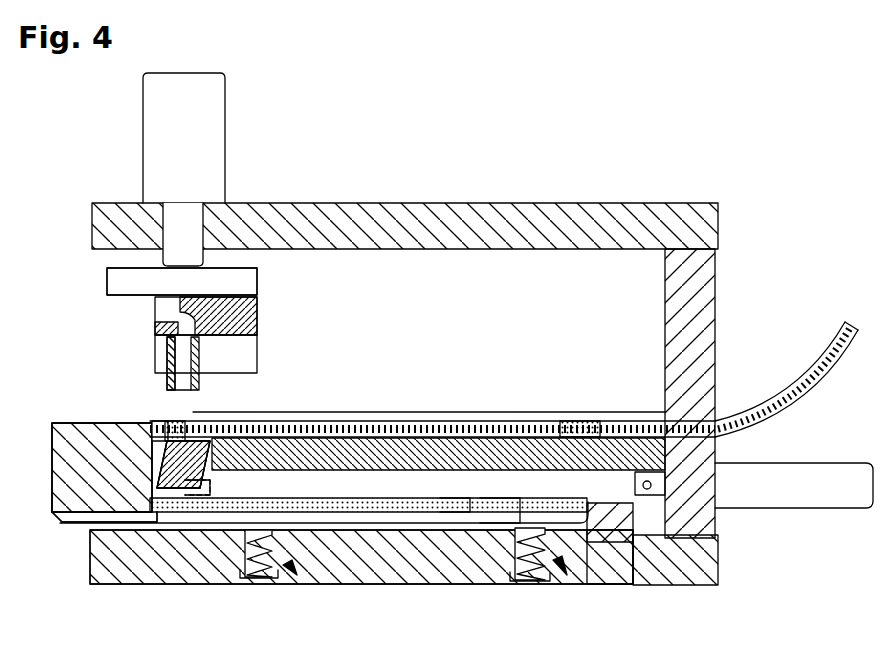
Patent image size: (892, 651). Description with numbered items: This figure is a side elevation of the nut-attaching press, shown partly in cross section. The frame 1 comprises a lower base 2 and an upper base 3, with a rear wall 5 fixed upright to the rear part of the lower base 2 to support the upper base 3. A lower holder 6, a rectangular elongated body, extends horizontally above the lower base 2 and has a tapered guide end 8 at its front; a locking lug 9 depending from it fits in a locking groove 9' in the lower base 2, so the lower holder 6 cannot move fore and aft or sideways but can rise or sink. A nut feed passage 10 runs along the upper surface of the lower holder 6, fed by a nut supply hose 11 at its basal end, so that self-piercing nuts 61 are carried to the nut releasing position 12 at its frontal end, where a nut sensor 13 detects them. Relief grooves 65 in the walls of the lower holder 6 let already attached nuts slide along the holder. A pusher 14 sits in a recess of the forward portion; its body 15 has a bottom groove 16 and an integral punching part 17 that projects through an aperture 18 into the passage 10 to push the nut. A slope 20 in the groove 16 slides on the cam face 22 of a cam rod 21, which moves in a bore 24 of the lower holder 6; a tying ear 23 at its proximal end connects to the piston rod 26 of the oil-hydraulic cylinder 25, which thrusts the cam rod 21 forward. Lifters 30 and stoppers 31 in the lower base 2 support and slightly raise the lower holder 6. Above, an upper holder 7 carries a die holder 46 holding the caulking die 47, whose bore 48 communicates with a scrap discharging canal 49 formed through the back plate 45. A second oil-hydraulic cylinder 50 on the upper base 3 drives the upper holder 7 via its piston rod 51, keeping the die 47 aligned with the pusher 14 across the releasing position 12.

The frame 1 is at (492, 206).
The lower base 2 is at (338, 553).
The upper base 3 is at (425, 205).
The rear wall 5 is at (700, 298).
The lower holder 6 is at (395, 560).
The upper holder 7 is at (107, 278).
The tapered guide end 8 is at (75, 420).
The locking lug 9 is at (629, 568).
The locking groove 9' is at (610, 579).
The nut feed passage 10 is at (474, 430).
The nut supply hose 11 is at (835, 335).
The nut releasing position 12 is at (215, 415).
The nut sensor 13 is at (152, 428).
The pusher 14 is at (75, 510).
The pusher body 15 is at (118, 480).
The bottom groove 16 is at (175, 500).
The punching part 17 is at (118, 455).
The aperture 18 is at (225, 432).
The slope 20 is at (165, 455).
The cam rod 21 is at (450, 480).
The cam face 22 is at (212, 495).
The tying ear 23 is at (718, 565).
The bore 24 is at (498, 520).
The oil-hydraulic cylinder 25 is at (815, 508).
The piston rod 26 is at (652, 487).
The lifters 30 is at (290, 580).
The stoppers 31 is at (550, 580).
The back plate 45 is at (257, 288).
The die holder 46 is at (257, 350).
The caulking die 47 is at (162, 356).
The bore 48 is at (170, 382).
The scrap discharging canal 49 is at (160, 318).
The oil-hydraulic cylinder 50 is at (226, 110).
The piston rod 51 is at (210, 218).
The self-piercing nuts 61 is at (185, 420).
The relief grooves 65 is at (365, 525).